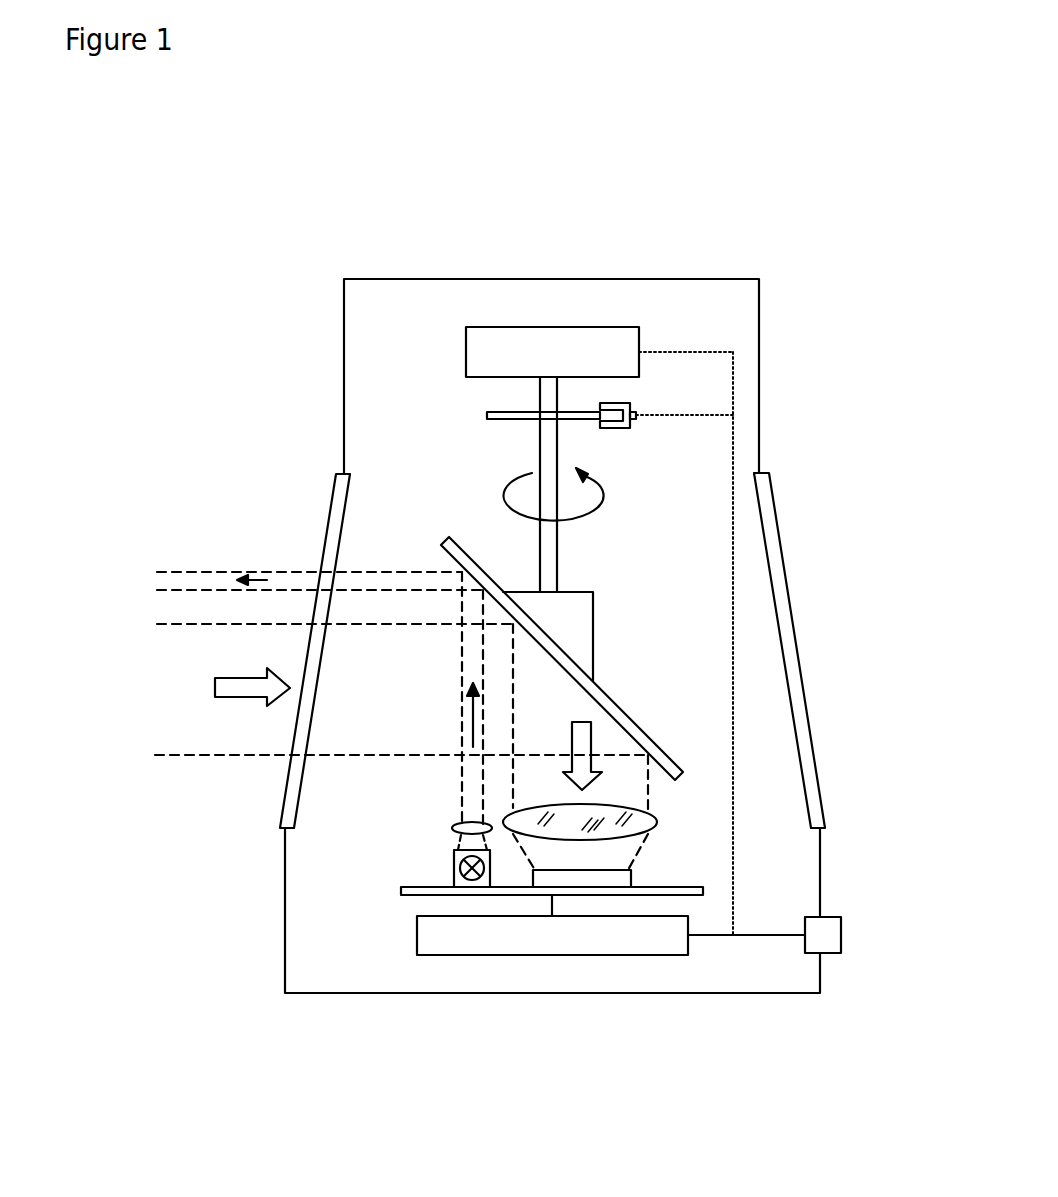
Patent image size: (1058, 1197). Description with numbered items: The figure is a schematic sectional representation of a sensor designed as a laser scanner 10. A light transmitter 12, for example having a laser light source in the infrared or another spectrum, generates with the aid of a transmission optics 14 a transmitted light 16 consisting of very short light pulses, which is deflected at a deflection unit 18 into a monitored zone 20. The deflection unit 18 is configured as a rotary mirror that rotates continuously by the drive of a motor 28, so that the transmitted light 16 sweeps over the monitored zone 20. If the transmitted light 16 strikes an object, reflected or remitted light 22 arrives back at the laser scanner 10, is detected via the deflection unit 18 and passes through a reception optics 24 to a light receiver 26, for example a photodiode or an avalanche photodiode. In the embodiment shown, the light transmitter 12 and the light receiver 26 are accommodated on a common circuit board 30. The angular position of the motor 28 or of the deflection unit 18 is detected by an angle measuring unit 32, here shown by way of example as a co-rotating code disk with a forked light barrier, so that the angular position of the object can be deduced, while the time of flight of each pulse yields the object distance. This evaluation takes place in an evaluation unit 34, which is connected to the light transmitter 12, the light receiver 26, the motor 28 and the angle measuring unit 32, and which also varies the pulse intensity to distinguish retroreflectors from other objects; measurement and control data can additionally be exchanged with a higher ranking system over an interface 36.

The laser scanner 10 is at (562, 588).
The light transmitter 12 is at (412, 861).
The transmission optics 14 is at (420, 818).
The transmitted light 16 is at (396, 655).
The deflection unit 18 is at (551, 621).
The monitored zone 20 is at (434, 634).
The remitted light 22 is at (171, 744).
The reception optics 24 is at (617, 797).
The light receiver 26 is at (613, 860).
The motor 28 is at (512, 498).
The common circuit board 30 is at (602, 889).
The angle measuring unit 32 is at (610, 643).
The evaluation unit 34 is at (611, 949).
The interface 36 is at (884, 954).